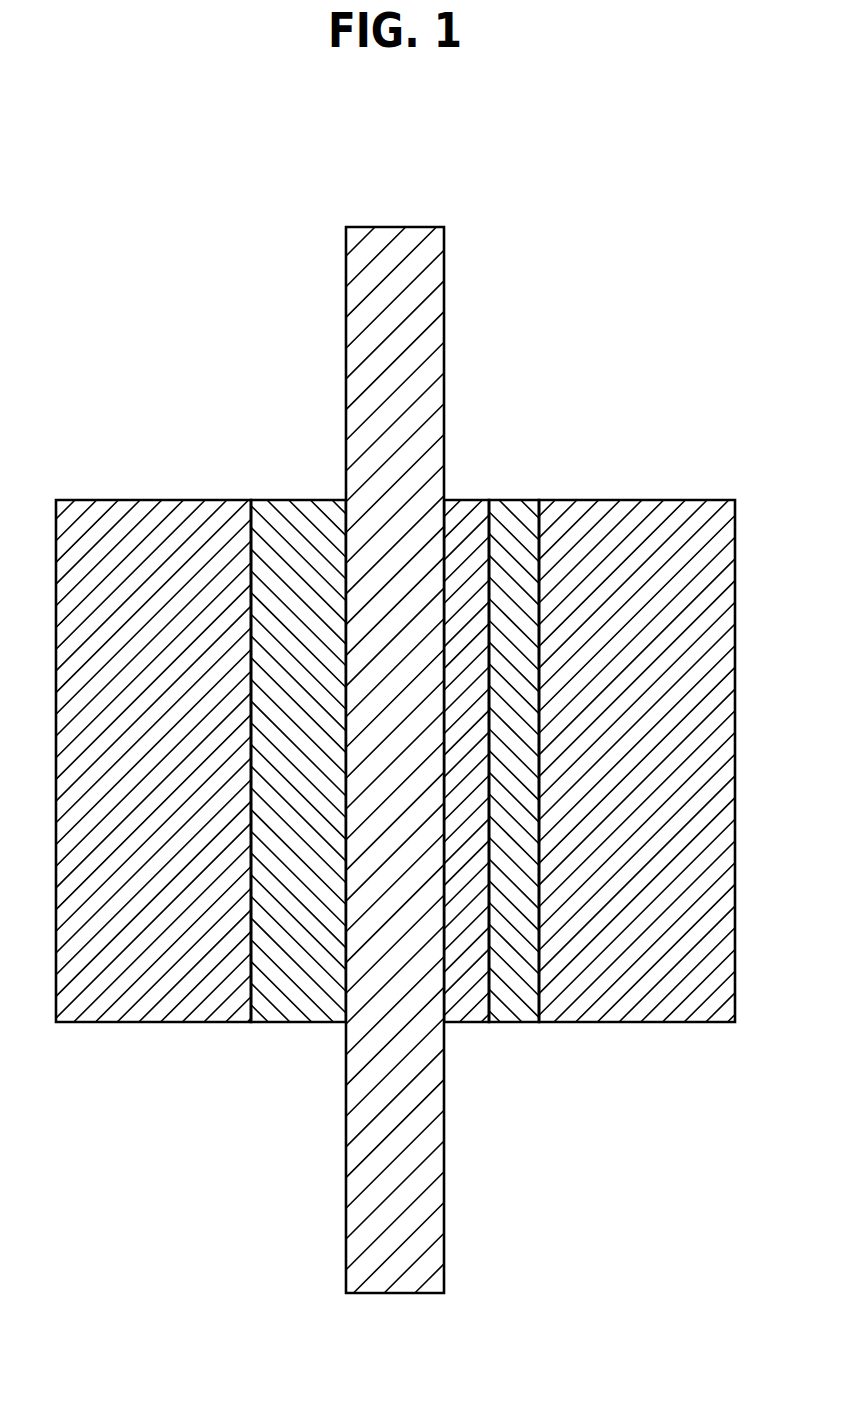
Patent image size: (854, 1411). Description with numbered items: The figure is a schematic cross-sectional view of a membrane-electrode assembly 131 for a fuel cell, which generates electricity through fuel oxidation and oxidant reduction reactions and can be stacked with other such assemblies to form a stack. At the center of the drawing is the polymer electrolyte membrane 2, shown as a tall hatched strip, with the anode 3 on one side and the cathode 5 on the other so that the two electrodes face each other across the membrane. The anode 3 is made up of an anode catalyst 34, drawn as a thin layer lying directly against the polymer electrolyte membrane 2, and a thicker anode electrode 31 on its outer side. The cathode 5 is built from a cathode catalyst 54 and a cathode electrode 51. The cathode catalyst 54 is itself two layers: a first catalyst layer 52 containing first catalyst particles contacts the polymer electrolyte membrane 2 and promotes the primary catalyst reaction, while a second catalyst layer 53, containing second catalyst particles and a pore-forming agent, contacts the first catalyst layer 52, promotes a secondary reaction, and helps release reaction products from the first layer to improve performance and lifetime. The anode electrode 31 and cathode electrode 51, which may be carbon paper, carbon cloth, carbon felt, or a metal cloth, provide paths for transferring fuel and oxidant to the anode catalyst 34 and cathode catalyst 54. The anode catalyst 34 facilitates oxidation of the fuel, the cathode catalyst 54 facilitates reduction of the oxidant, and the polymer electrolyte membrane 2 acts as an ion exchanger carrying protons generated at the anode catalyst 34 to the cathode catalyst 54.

The membrane-electrode assembly 131 is at (374, 142).
The polymer electrolyte membrane 2 is at (440, 271).
The anode 3 is at (337, 390).
The anode electrode 31 is at (168, 501).
The anode catalyst 34 is at (318, 501).
The cathode 5 is at (454, 390).
The cathode electrode 51 is at (620, 501).
The first catalyst layer 52 is at (468, 501).
The second catalyst layer 53 is at (514, 501).
The cathode catalyst 54 is at (454, 438).